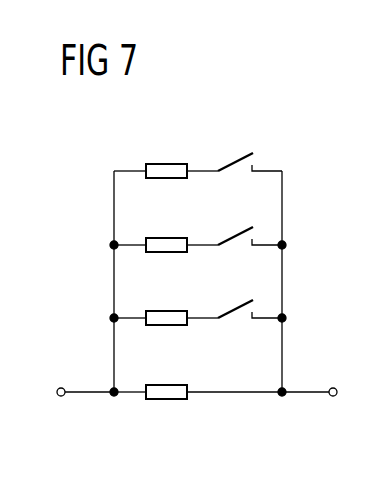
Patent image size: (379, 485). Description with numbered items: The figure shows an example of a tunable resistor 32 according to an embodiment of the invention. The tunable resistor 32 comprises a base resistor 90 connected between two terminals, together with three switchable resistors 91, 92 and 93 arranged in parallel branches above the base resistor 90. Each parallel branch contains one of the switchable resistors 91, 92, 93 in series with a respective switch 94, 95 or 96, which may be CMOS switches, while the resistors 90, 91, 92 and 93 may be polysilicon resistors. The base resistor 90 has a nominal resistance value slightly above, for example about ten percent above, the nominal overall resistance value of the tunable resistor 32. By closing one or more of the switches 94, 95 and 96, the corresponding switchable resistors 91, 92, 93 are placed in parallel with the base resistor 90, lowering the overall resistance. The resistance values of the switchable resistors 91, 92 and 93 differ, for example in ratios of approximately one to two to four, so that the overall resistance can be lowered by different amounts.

The tunable resistor 32 is at (284, 141).
The base resistor 90 is at (167, 385).
The switchable resistor 91 is at (167, 311).
The switchable resistor 92 is at (167, 237).
The switchable resistor 93 is at (167, 163).
The switch 94 is at (237, 309).
The switch 95 is at (237, 235).
The switch 96 is at (236, 160).